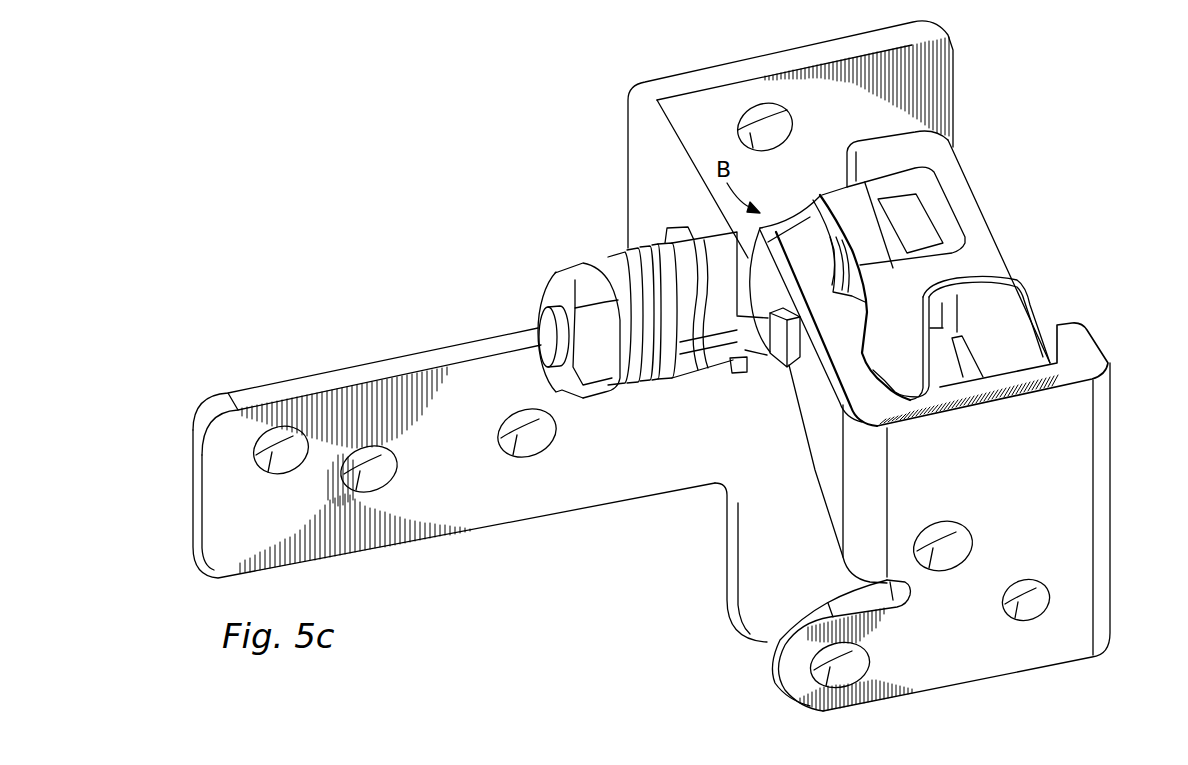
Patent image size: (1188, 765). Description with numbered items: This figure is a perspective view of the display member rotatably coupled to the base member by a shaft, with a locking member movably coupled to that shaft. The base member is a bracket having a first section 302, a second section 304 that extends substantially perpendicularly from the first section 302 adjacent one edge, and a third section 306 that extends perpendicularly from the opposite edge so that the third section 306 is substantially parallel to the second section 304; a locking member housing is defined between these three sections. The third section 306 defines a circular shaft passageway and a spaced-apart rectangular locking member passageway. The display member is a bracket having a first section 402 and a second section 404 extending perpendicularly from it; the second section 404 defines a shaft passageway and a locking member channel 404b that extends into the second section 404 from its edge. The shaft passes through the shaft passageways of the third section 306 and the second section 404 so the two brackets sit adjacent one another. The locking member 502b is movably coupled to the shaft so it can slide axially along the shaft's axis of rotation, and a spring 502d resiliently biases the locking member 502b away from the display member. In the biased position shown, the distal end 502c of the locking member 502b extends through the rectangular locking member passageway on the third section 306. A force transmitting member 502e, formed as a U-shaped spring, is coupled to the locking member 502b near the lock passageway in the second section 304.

The first section 302 is at (965, 690).
The second section 304 is at (1105, 320).
The third section 306 is at (822, 496).
The first section 402 is at (585, 513).
The second section 404 is at (628, 176).
The locking member channel 404b is at (750, 355).
The locking member 502b is at (827, 193).
The distal end 502c is at (780, 372).
The spring 502d is at (815, 197).
The force transmitting member 502e is at (975, 178).